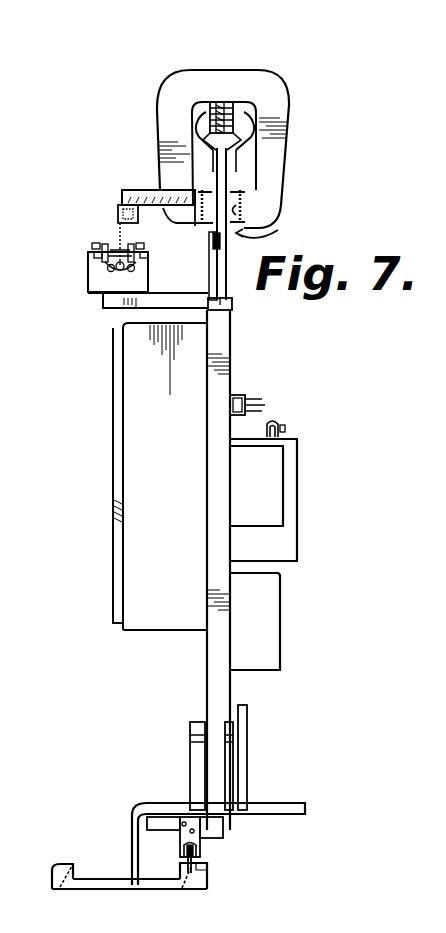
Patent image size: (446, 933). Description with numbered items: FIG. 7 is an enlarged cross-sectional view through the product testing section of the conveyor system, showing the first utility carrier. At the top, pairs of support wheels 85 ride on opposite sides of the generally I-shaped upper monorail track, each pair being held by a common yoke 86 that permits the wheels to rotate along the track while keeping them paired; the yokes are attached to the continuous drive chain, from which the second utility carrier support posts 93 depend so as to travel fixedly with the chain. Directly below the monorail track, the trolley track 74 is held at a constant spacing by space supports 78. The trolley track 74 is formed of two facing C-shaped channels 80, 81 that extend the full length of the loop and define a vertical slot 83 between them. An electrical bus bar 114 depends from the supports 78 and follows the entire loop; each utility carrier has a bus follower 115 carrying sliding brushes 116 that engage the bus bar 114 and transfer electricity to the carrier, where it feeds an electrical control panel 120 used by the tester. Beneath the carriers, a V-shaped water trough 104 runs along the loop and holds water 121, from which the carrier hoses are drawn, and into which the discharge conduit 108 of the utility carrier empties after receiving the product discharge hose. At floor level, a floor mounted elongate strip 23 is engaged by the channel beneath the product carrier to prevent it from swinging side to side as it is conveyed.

The space supports 78 is at (287, 97).
The support wheels 85 is at (226, 100).
The yoke 86 is at (236, 140).
The trolley track 74 is at (256, 195).
The C-shaped channel 81 is at (251, 211).
The vertical slot 83 is at (273, 225).
The second utility carrier support posts 93 is at (226, 290).
The C-shaped channel 80 is at (205, 233).
The electrical bus bar 114 is at (118, 221).
The bus follower 115 is at (88, 286).
The sliding brushes 116 is at (143, 268).
The electrical control panel 120 is at (297, 499).
The discharge conduit 108 is at (132, 812).
The water trough 104 is at (72, 868).
The water 121 is at (118, 882).
The floor mounted elongate strip 23 is at (186, 858).